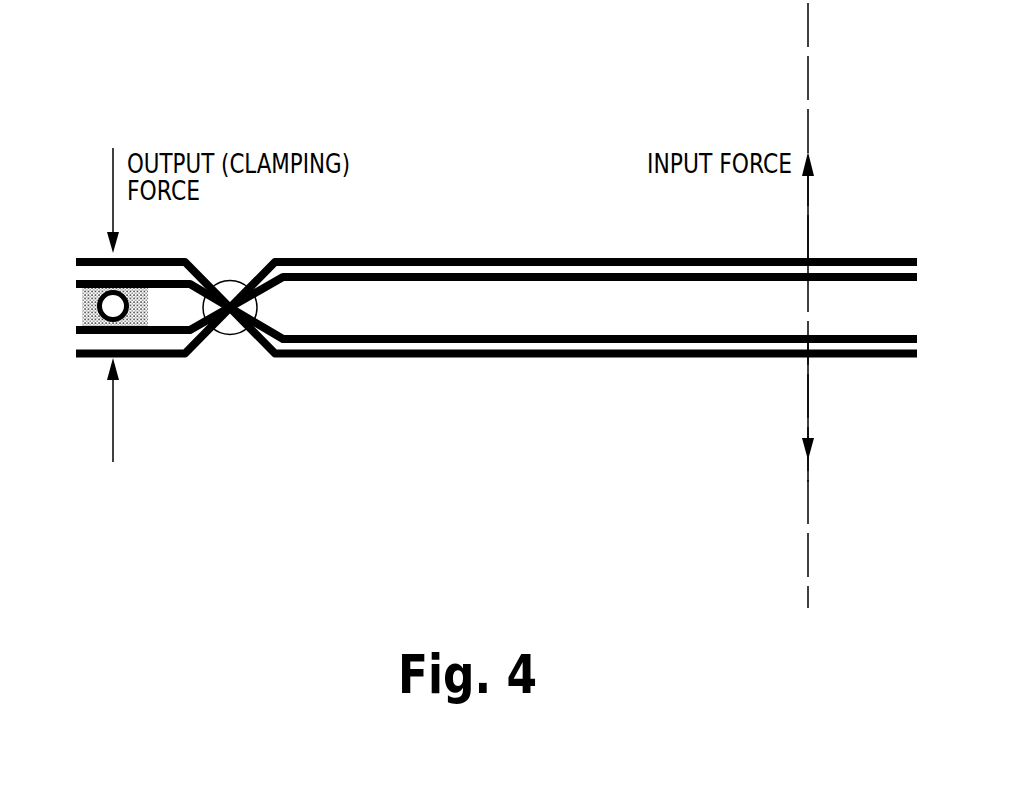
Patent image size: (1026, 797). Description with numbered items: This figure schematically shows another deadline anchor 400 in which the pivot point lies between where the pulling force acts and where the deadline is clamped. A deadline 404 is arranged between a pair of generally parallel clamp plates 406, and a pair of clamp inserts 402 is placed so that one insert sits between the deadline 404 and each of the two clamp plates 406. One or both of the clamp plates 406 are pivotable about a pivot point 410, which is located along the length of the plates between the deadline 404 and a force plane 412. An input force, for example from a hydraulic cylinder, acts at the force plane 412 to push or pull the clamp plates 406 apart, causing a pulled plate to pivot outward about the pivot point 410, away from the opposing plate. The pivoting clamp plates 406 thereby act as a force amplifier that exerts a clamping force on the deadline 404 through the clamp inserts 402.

The deadline anchor 400 is at (369, 65).
The clamp insert 402 is at (81, 292).
The deadline 404 is at (113, 312).
The clamp plate 406 is at (886, 266).
The pivot point 410 is at (228, 280).
The force plane 412 is at (808, 563).